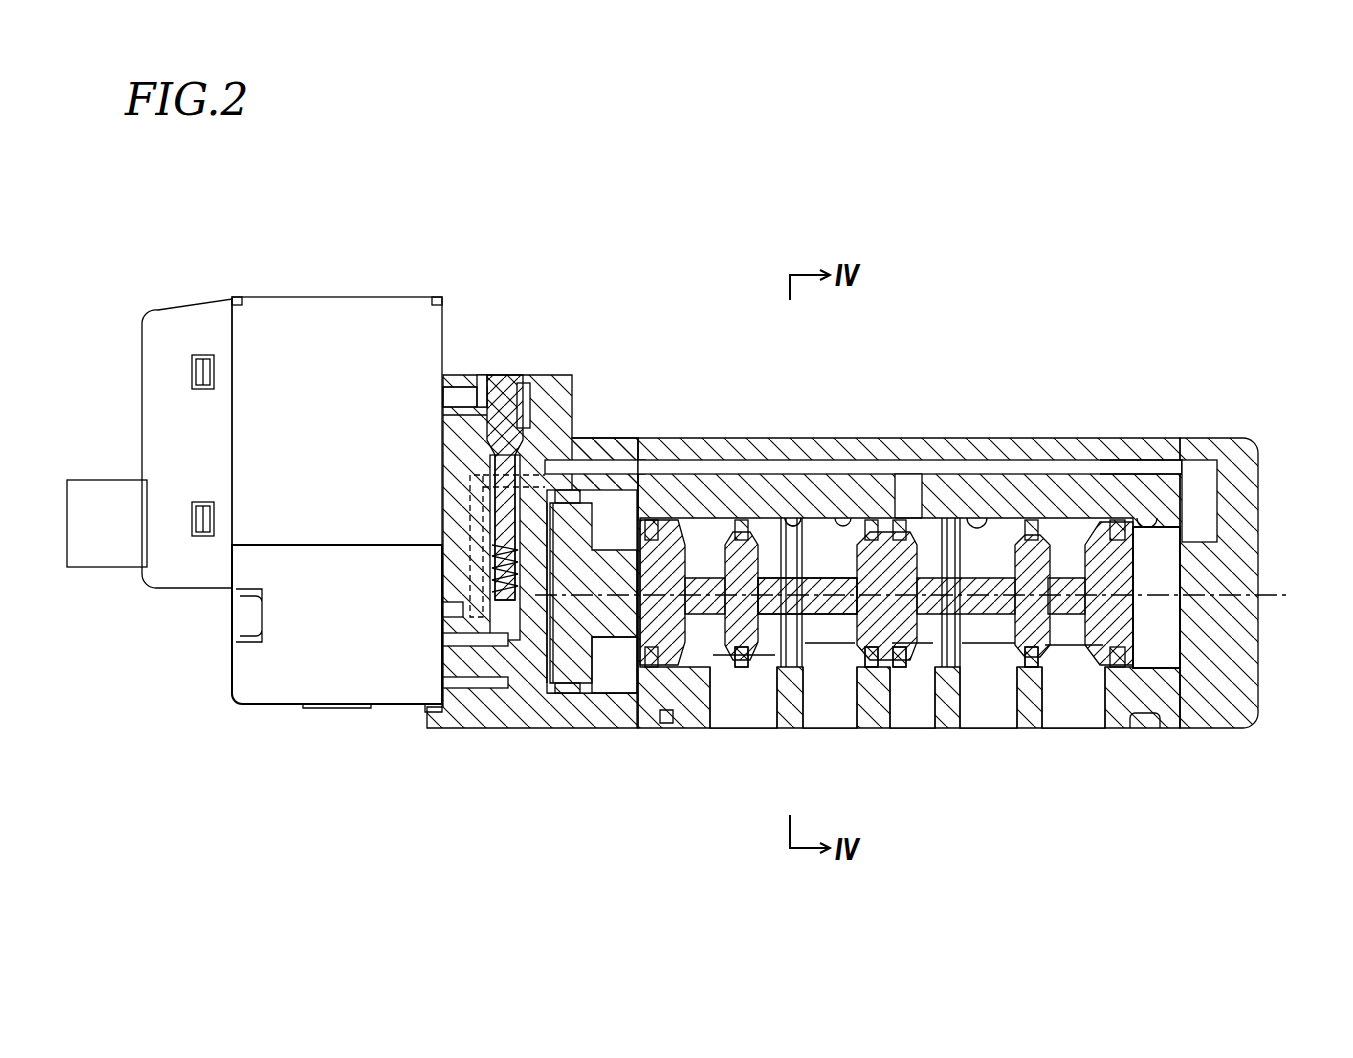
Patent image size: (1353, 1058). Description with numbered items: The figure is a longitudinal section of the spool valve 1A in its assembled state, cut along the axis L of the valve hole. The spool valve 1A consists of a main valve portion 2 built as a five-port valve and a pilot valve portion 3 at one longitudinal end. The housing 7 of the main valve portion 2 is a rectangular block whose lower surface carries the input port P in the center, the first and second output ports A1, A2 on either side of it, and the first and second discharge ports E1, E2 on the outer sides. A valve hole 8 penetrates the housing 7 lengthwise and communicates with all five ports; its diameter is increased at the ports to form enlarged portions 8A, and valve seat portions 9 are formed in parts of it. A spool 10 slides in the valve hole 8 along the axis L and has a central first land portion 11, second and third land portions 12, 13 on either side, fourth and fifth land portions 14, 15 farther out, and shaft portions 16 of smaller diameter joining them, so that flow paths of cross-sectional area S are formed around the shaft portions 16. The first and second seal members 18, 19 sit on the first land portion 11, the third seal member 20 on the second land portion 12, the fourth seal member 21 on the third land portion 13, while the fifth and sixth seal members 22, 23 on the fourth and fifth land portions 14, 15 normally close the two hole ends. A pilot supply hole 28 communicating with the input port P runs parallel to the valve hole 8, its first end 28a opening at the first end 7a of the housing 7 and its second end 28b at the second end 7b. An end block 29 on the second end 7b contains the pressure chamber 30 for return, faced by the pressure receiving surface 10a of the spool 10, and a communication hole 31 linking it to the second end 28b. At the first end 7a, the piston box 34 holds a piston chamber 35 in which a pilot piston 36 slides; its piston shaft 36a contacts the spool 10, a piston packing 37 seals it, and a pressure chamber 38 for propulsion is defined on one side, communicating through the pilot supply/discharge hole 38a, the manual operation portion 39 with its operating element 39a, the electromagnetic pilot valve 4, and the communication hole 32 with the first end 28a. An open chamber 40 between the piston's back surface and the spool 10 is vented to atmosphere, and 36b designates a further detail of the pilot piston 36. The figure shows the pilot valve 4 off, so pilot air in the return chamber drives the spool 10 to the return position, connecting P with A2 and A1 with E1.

The spool valve 1A is at (1122, 209).
The main valve portion 2 is at (1022, 298).
The pilot valve portion 3 is at (374, 252).
The pilot valve 4 is at (315, 318).
The housing 7 is at (906, 452).
The first end 7a is at (630, 702).
The second end 7b is at (1178, 706).
The valve hole 8 is at (1120, 523).
The enlarged portions 8A is at (871, 522).
The valve seat portions 9 is at (793, 516).
The spool 10 is at (989, 556).
The pressure receiving surface 10a is at (1140, 628).
The first land portion 11 is at (882, 553).
The second land portion 12 is at (738, 552).
The third land portion 13 is at (1031, 524).
The fourth land portion 14 is at (668, 552).
The fifth land portion 15 is at (1115, 553).
The shaft portions 16 is at (815, 590).
The first seal member 18 is at (871, 670).
The second seal member 19 is at (908, 668).
The third seal member 20 is at (745, 668).
The fourth seal member 21 is at (1029, 668).
The fifth seal member 22 is at (668, 690).
The sixth seal member 23 is at (1111, 702).
The pilot supply hole 28 is at (778, 470).
The first end of pilot supply hole 28a is at (650, 465).
The second end of pilot supply hole 28b is at (1160, 471).
The end block 29 is at (1232, 688).
The pressure chamber for return 30 is at (1165, 576).
The communication hole 31 is at (1212, 490).
The communication hole 32 is at (584, 437).
The piston box 34 is at (548, 380).
The piston chamber 35 is at (612, 492).
The pilot piston 36 is at (552, 640).
The piston shaft 36a is at (620, 682).
The piston passage 36b is at (533, 606).
The piston packing 37 is at (566, 693).
The pressure chamber for propulsion 38 is at (560, 642).
The pilot supply/discharge hole 38a is at (530, 540).
The manual operation portion 39 is at (497, 362).
The operating element 39a is at (478, 393).
The open chamber 40 is at (594, 702).
The first output port A1 is at (818, 705).
The second output port A2 is at (980, 705).
The first discharge port E1 is at (727, 702).
The second discharge port E2 is at (1069, 702).
The input port P is at (912, 703).
The cross-sectional area of flow paths S is at (846, 563).
The axis L is at (922, 598).